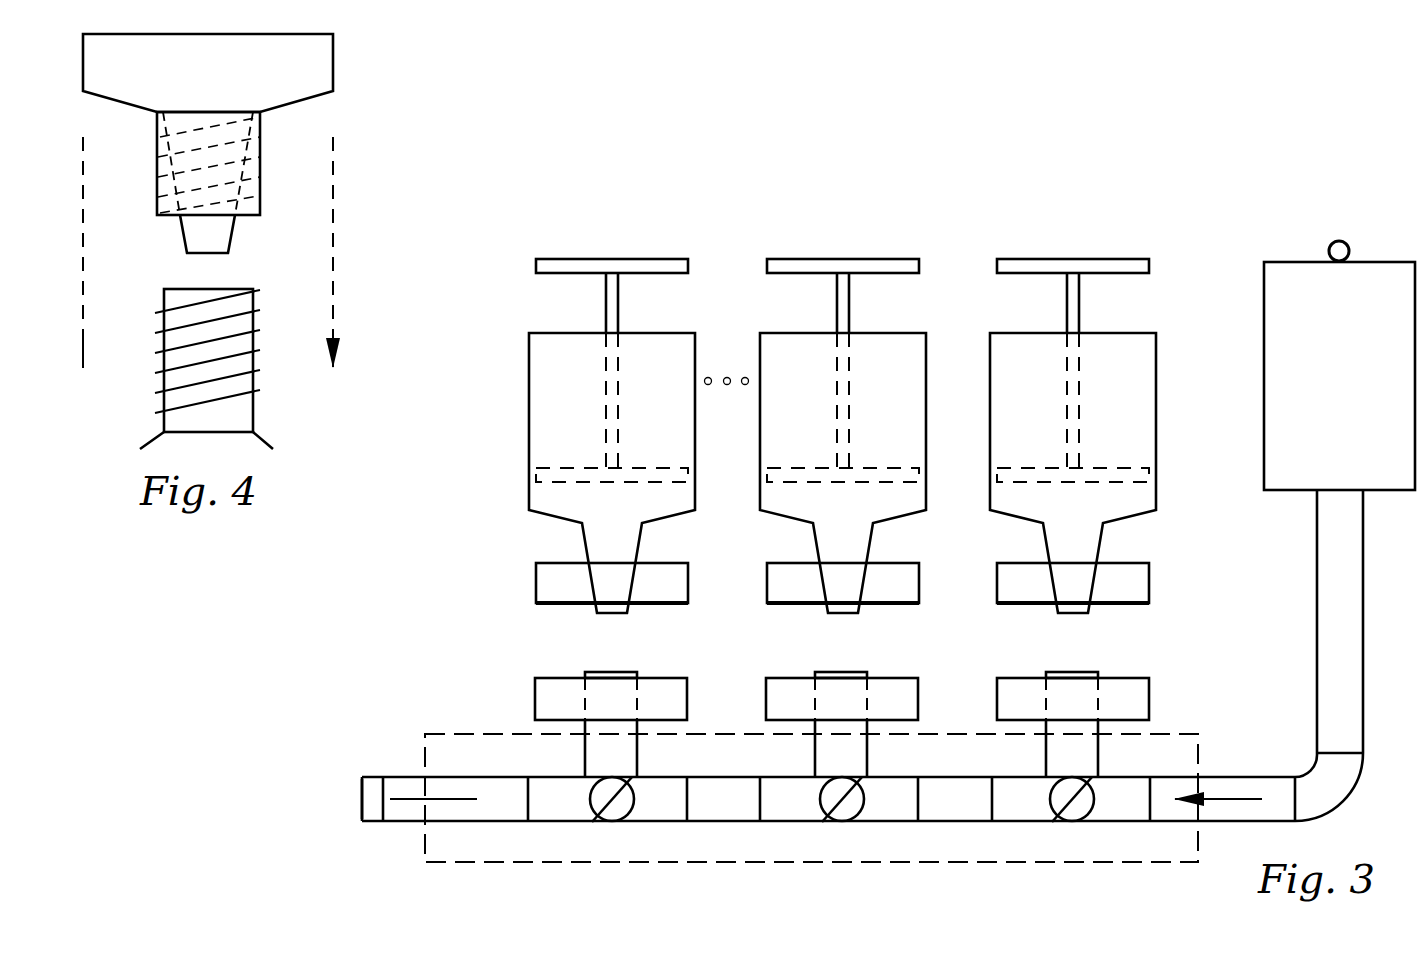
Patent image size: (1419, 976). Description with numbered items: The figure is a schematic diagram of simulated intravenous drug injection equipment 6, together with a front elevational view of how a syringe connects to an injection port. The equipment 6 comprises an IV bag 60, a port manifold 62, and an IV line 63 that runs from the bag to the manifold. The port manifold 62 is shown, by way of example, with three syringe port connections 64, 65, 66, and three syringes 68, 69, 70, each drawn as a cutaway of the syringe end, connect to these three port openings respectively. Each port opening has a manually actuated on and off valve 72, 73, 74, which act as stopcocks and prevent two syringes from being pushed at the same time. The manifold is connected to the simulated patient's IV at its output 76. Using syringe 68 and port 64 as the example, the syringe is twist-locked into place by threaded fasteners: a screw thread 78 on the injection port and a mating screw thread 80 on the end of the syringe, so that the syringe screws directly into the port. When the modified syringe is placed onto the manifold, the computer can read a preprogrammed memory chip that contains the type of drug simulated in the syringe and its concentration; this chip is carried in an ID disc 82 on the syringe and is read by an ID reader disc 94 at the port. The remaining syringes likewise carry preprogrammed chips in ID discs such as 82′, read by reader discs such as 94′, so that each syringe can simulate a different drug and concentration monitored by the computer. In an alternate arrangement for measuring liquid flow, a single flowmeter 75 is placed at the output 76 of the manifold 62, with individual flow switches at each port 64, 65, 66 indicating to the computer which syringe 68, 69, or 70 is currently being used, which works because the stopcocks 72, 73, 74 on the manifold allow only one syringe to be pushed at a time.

In FIG. 3, the simulated intravenous drug injection equipment 6 is at (416, 619).
In FIG. 3, the IV bag 60 is at (1358, 388).
In FIG. 3, the port manifold 62 is at (422, 848).
In FIG. 3, the IV line 63 is at (1317, 562).
In FIG. 4, the syringe port connection 64 is at (252, 402).
In FIG. 3, the syringe port connection 64 is at (1085, 672).
In FIG. 3, the syringe port connection 65 is at (847, 672).
In FIG. 3, the syringe port connection 66 is at (612, 672).
In FIG. 4, the syringe 68 is at (333, 57).
In FIG. 3, the syringe 68 is at (1156, 495).
In FIG. 3, the syringe 69 is at (926, 425).
In FIG. 3, the syringe 70 is at (695, 493).
In FIG. 3, the on and off valve 72 is at (1093, 810).
In FIG. 3, the on and off valve 73 is at (865, 810).
In FIG. 3, the on and off valve 74 is at (632, 810).
In FIG. 3, the flowmeter 75 is at (378, 777).
In FIG. 3, the output of manifold 76 is at (362, 798).
In FIG. 4, the injection port screw thread 78 is at (284, 320).
In FIG. 4, the syringe end screw thread 80 is at (296, 167).
In FIG. 3, the ID disc 82 is at (997, 580).
In FIG. 3, the ID disc 82′ is at (767, 578).
In FIG. 3, the ID reader disc 94 is at (1149, 697).
In FIG. 3, the ID reader disc 94′ is at (918, 702).